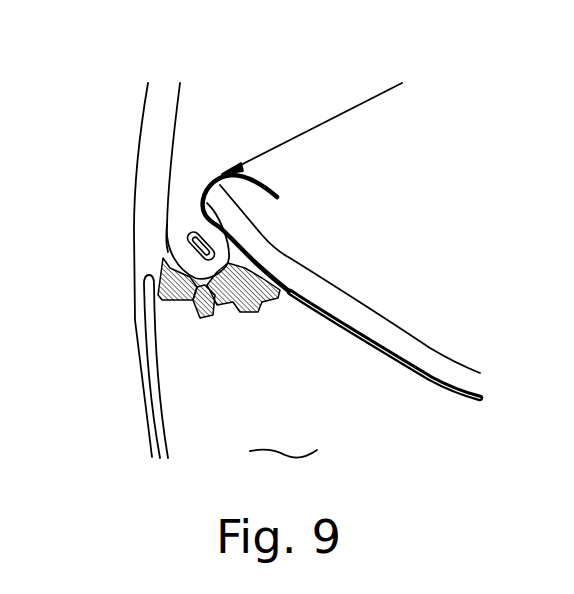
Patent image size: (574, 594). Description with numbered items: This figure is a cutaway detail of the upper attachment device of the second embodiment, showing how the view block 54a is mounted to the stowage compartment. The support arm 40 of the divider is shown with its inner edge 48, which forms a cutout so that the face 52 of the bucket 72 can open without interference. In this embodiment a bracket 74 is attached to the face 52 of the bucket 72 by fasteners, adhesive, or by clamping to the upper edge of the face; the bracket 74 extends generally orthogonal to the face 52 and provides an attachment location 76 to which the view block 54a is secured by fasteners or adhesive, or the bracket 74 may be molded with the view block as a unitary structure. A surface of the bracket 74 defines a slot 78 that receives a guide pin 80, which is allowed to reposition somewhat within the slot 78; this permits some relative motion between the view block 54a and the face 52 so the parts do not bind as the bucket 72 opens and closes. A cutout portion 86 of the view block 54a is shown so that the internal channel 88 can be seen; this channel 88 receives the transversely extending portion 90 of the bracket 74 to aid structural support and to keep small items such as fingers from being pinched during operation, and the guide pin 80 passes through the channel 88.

The support arm 40 is at (133, 133).
The inner edge 48 is at (155, 433).
The face 52 is at (428, 378).
The view block 54a is at (283, 436).
The bucket 72 is at (350, 111).
The bracket 74 is at (178, 225).
The attachment location 76 is at (209, 318).
The slot 78 is at (191, 229).
The guide pin 80 is at (170, 255).
The cutout portion 86 is at (260, 313).
The internal channel 88 is at (250, 260).
The transversely extending portion 90 is at (177, 235).